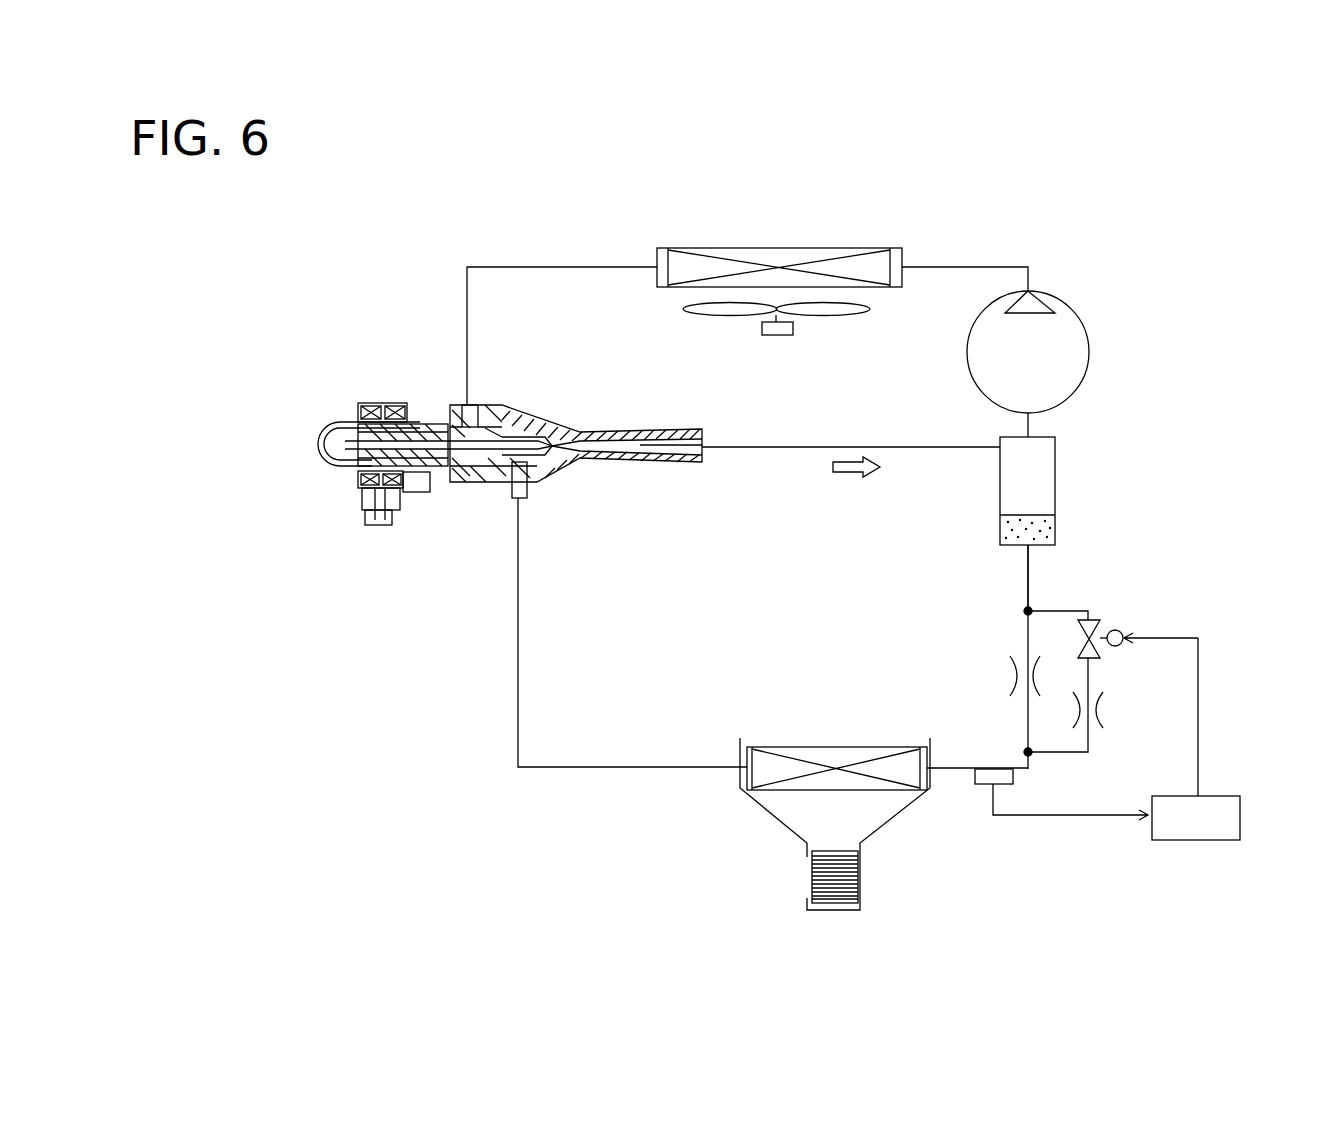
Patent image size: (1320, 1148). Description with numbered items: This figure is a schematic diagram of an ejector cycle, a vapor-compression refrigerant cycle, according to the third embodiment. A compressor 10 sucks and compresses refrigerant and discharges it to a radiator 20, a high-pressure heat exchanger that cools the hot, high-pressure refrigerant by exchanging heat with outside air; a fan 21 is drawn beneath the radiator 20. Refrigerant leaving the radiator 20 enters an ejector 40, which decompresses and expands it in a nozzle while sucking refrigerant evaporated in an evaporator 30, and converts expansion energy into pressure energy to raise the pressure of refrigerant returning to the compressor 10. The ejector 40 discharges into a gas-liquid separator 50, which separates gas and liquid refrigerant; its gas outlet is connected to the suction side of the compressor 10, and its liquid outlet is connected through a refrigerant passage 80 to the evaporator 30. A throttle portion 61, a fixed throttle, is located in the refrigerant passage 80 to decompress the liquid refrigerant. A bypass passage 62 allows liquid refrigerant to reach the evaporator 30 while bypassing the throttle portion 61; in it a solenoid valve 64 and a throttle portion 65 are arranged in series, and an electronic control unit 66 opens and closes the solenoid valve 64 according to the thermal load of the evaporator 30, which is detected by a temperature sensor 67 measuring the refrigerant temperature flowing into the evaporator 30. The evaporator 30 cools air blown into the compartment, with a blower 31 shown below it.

The compressor 10 is at (1048, 341).
The radiator 20 is at (657, 256).
The cooling fan 21 is at (840, 312).
The evaporator 30 is at (780, 747).
The blower 31 is at (860, 880).
The ejector 40 is at (407, 365).
The gas-liquid separator 50 is at (1037, 497).
The throttle portion 61 is at (1010, 672).
The bypass passage 62 is at (1093, 612).
The solenoid valve 64 is at (1100, 627).
The throttle portion 65 is at (1100, 710).
The electronic control unit 66 is at (1222, 796).
The temperature sensor 67 is at (1015, 777).
The refrigerant passage 80 is at (1028, 582).